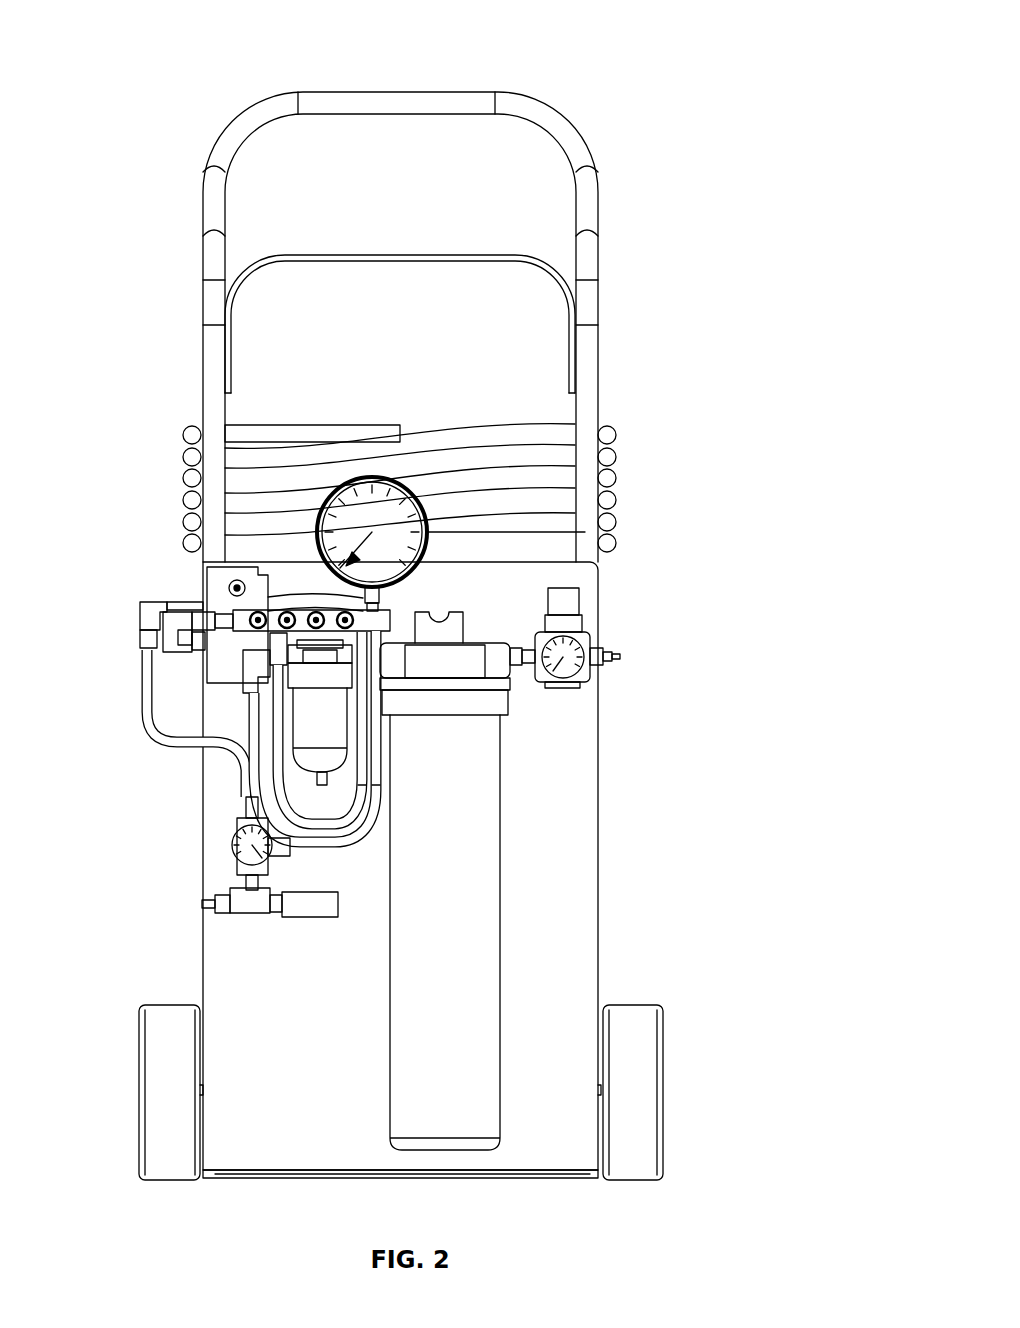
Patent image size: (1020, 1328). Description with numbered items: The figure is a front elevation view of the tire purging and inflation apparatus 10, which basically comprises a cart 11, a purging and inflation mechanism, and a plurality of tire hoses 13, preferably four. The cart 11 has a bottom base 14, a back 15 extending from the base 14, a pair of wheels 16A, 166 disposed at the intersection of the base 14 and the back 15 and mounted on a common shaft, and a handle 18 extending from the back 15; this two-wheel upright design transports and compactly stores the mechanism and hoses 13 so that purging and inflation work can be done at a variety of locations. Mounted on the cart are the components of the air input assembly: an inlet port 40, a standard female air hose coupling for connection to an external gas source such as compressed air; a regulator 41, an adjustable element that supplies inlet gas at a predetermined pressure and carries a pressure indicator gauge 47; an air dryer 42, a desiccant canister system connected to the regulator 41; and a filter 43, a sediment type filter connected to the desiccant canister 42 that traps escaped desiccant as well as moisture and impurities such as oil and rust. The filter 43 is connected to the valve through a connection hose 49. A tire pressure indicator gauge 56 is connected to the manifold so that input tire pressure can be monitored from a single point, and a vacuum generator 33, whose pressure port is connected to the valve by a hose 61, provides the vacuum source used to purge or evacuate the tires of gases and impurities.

The tire purging and inflation apparatus 10 is at (665, 62).
The cart 11 is at (668, 297).
The tire hoses 13 is at (158, 432).
The bottom base 14 is at (155, 528).
The back 15 is at (222, 952).
The wheel 16A is at (157, 1084).
The wheel 166 is at (640, 1075).
The handle 18 is at (393, 105).
The vacuum generator 33 is at (200, 850).
The inlet port 40 is at (608, 645).
The regulator 41 is at (533, 663).
The air dryer 42 is at (540, 848).
The filter 43 is at (325, 795).
The pressure indicator gauge 47 is at (562, 688).
The connection hose 49 is at (385, 788).
The tire pressure indicator gauge 56 is at (405, 560).
The hose 61 is at (147, 690).